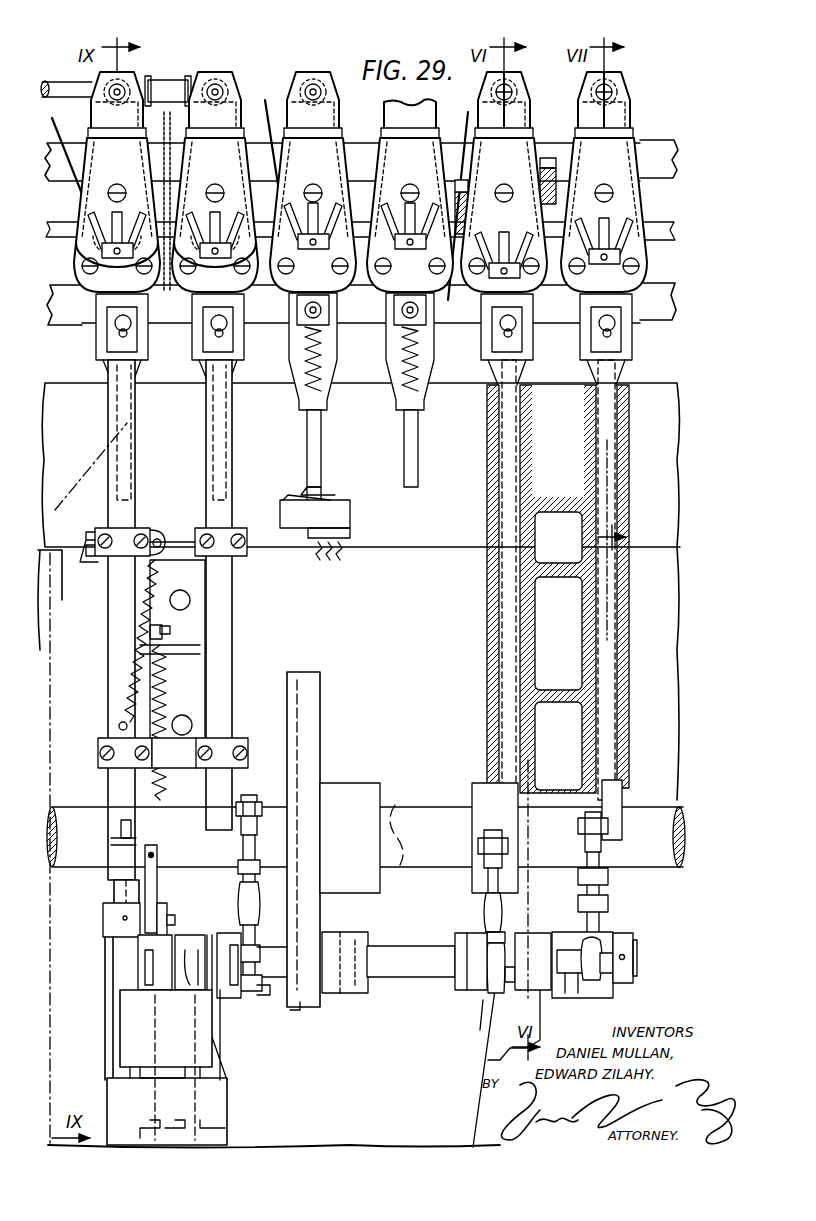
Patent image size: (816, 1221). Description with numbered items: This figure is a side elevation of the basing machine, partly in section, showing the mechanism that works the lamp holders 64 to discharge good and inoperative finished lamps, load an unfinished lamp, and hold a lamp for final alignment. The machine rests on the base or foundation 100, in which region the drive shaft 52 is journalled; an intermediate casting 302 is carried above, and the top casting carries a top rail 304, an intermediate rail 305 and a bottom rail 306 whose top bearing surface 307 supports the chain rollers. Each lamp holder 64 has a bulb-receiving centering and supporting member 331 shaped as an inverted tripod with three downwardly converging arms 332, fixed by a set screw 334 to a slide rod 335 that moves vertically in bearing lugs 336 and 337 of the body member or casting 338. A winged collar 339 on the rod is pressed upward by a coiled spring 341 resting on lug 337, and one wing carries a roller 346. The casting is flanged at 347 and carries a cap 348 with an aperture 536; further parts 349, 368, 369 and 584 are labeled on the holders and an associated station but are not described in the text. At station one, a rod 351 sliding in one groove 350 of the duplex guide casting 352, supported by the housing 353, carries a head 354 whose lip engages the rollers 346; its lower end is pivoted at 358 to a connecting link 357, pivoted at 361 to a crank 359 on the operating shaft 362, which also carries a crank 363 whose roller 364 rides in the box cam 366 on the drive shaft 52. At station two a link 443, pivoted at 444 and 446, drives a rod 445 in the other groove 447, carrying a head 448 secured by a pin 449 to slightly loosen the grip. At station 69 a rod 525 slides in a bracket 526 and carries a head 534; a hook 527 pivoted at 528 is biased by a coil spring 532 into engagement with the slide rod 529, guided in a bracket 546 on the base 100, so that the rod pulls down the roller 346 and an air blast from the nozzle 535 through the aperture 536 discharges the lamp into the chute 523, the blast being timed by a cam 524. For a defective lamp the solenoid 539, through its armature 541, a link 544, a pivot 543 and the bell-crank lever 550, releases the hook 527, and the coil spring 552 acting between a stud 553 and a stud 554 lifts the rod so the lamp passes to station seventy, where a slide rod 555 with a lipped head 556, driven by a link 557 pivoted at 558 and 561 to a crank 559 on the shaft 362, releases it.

The drive shaft 52 is at (398, 812).
The lamp holder 64 is at (250, 115).
The station "69" 69 is at (112, 880).
The base or foundation 100 is at (294, 1143).
The intermediate casting 302 is at (80, 383).
The top rail 304 is at (74, 150).
The intermediate rail 305 is at (341, 243).
The bottom rail 306 is at (80, 325).
The top bearing surface 307 is at (80, 240).
The bulb-receiving centering and supporting member 331 is at (192, 210).
The downwardly converging arms 332 is at (306, 190).
The set screw 334 is at (142, 268).
The slide rod 335 is at (403, 433).
The bearing lug 336 is at (338, 298).
The bearing lug 337 is at (412, 402).
The body member or casting 338 is at (285, 396).
The winged collar 339 is at (392, 312).
The coiled spring 341 is at (412, 360).
The roller 346 is at (108, 322).
The flange 347 is at (630, 130).
The cap 348 is at (630, 75).
The cap 349 is at (304, 74).
The groove 350 is at (498, 578).
The rod 351 is at (496, 612).
The duplex guide casting 352 is at (495, 655).
The housing of the transfer and turnover mechanism 353 is at (562, 665).
The head 354 is at (490, 366).
The connecting link 357 is at (470, 893).
The pivot 358 is at (472, 812).
The crank 359 is at (455, 995).
The pivot 361 is at (505, 1000).
The operating shaft 362 is at (405, 953).
The crank 363 is at (330, 945).
The roller 364 is at (310, 1015).
The box cam 366 is at (320, 758).
The pin 368 is at (460, 180).
The pin 369 is at (548, 165).
The link 443 is at (610, 878).
The pivot 444 is at (605, 992).
The rod 445 is at (628, 712).
The pivot 446 is at (568, 740).
The groove 447 is at (618, 508).
The head 448 is at (612, 342).
The pin 449 is at (585, 345).
The chute 523 is at (80, 168).
The cam 524 is at (168, 158).
The rod 525 is at (135, 500).
The bracket 526 is at (210, 612).
The hook 527 is at (114, 852).
The pivot 528 is at (110, 785).
The slide rod 529 is at (110, 985).
The coil spring 532 is at (170, 705).
The head 534 is at (110, 348).
The nozzle 535 is at (145, 80).
The aperture 536 is at (218, 88).
The solenoid 539 is at (148, 1045).
The armature 541 is at (135, 970).
The pivot 543 is at (172, 910).
The link 544 is at (175, 925).
The bracket 546 is at (110, 940).
The bell-crank lever 550 is at (157, 868).
The coil spring 552 is at (128, 615).
The stud 553 is at (120, 722).
The stud 554 is at (160, 535).
The slide rod 555 is at (232, 487).
The lipped head 556 is at (208, 348).
The link 557 is at (243, 845).
The pivot 558 is at (262, 810).
The crank 559 is at (232, 1005).
The pivot 561 is at (262, 997).
The switch 584 is at (298, 530).